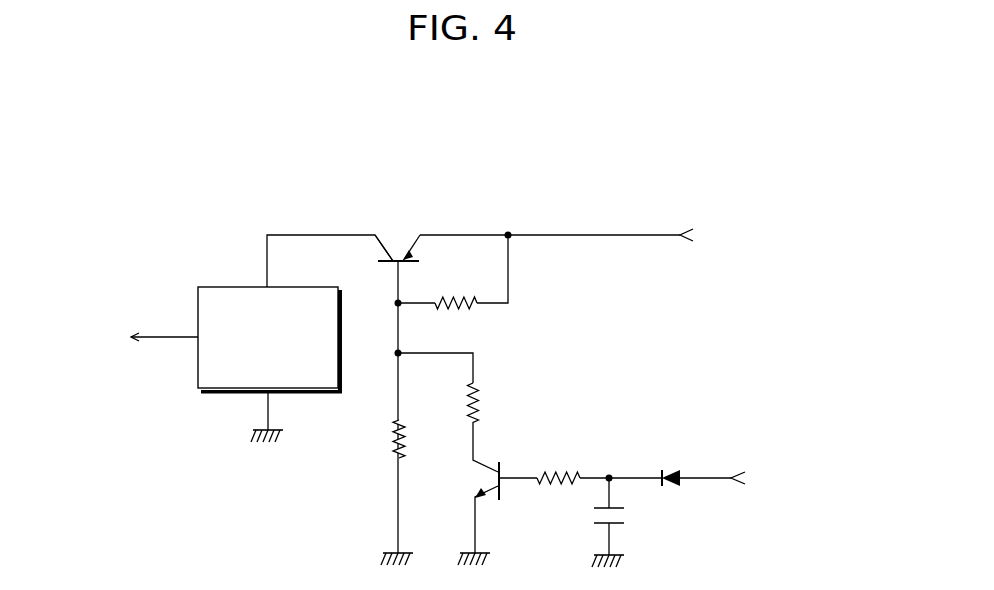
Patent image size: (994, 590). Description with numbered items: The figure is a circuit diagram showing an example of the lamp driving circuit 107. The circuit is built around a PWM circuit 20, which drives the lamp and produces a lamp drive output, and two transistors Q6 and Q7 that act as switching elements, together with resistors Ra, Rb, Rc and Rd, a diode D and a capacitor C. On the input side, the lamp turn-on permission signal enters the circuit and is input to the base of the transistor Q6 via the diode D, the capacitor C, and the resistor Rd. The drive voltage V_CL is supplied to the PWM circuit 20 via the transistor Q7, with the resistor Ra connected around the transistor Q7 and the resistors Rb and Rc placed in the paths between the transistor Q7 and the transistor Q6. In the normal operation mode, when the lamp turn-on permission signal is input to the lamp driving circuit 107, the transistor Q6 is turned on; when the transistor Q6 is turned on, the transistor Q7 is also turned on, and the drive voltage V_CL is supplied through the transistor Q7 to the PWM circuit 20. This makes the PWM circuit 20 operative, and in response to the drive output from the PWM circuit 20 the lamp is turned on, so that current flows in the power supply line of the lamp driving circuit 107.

The PWM circuit 20 is at (221, 287).
The lamp driving circuit 107 is at (543, 167).
The transistor Q7 is at (397, 234).
The transistor Q6 is at (470, 488).
The resistor Ra is at (453, 272).
The resistor Rb is at (379, 439).
The resistor Rc is at (488, 403).
The resistor Rd is at (558, 467).
The capacitor C is at (617, 516).
The diode D is at (671, 466).